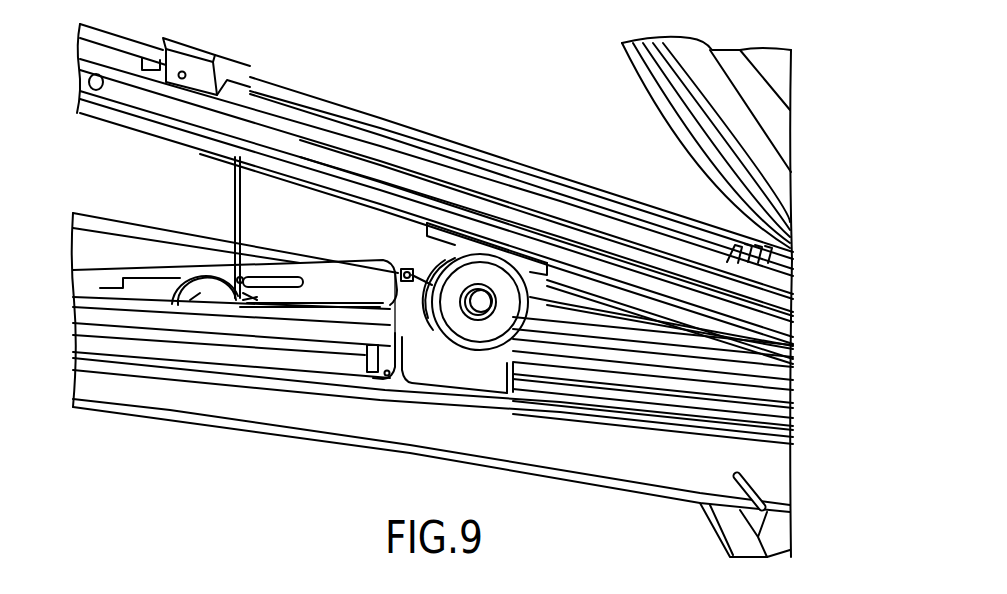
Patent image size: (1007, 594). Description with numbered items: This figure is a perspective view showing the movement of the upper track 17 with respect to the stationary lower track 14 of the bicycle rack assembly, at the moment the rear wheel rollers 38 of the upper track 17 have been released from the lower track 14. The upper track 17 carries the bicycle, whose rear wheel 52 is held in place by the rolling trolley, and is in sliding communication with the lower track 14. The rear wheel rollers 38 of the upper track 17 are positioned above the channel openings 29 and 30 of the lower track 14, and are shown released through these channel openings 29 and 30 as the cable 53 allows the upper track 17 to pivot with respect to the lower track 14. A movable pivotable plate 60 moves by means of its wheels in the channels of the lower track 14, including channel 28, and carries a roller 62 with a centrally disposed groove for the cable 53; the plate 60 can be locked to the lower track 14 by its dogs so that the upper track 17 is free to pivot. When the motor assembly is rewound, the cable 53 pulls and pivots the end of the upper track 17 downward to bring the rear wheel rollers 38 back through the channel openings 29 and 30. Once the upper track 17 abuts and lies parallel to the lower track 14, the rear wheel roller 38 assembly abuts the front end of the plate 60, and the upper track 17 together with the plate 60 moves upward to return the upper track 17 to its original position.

The lower track 14 is at (801, 443).
The upper track 17 is at (273, 113).
The channel 28 is at (622, 402).
The channel opening 29 is at (404, 270).
The channel opening 30 is at (433, 373).
The rear wheel roller 38 is at (477, 278).
The rear wheel 52 is at (723, 67).
The cable 53 is at (233, 172).
The movable pivotable plate 60 is at (247, 297).
The roller 62 is at (172, 303).